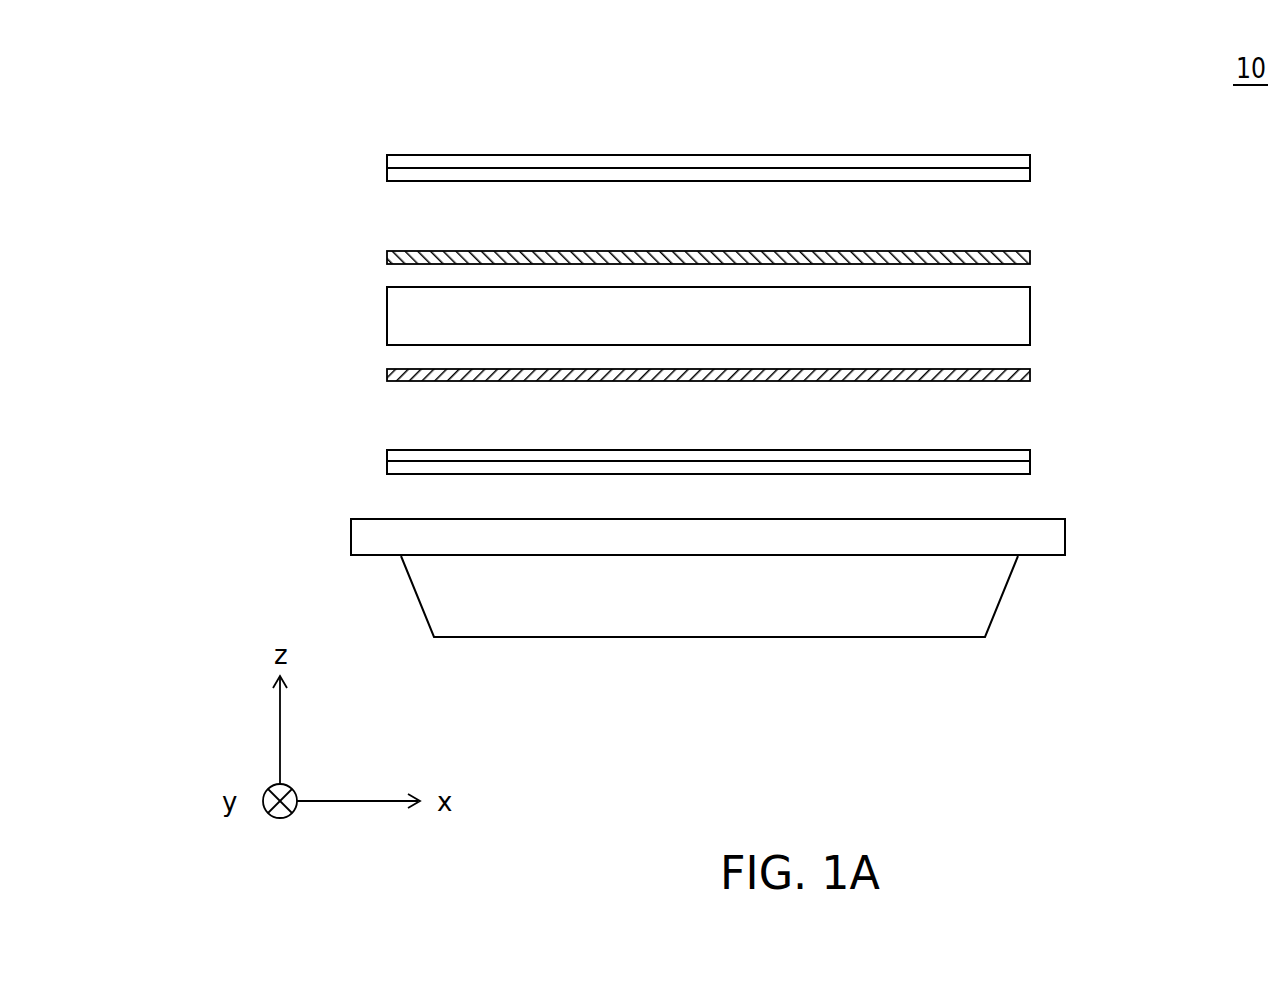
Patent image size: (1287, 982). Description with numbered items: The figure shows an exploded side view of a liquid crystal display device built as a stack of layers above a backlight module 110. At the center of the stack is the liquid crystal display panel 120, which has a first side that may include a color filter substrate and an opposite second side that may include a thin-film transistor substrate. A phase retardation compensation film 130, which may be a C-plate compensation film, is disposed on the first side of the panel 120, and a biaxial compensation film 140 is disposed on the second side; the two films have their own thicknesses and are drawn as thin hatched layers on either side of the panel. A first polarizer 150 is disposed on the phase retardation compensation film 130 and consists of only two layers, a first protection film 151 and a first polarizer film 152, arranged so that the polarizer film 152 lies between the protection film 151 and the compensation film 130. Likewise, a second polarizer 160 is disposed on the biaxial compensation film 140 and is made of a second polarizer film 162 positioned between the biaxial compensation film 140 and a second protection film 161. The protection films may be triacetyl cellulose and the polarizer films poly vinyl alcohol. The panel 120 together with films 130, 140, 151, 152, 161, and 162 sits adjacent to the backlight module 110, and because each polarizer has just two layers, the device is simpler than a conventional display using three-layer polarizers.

The backlight module 110 is at (995, 610).
The liquid crystal display panel 120 is at (1030, 318).
The phase retardation compensation film 130 is at (1030, 257).
The biaxial compensation film 140 is at (1030, 375).
The first polarizer 150 is at (822, 168).
The first protection film 151 is at (1030, 160).
The first polarizer film 152 is at (1030, 176).
The second polarizer 160 is at (822, 463).
The second protection film 161 is at (1030, 469).
The second polarizer film 162 is at (1030, 455).